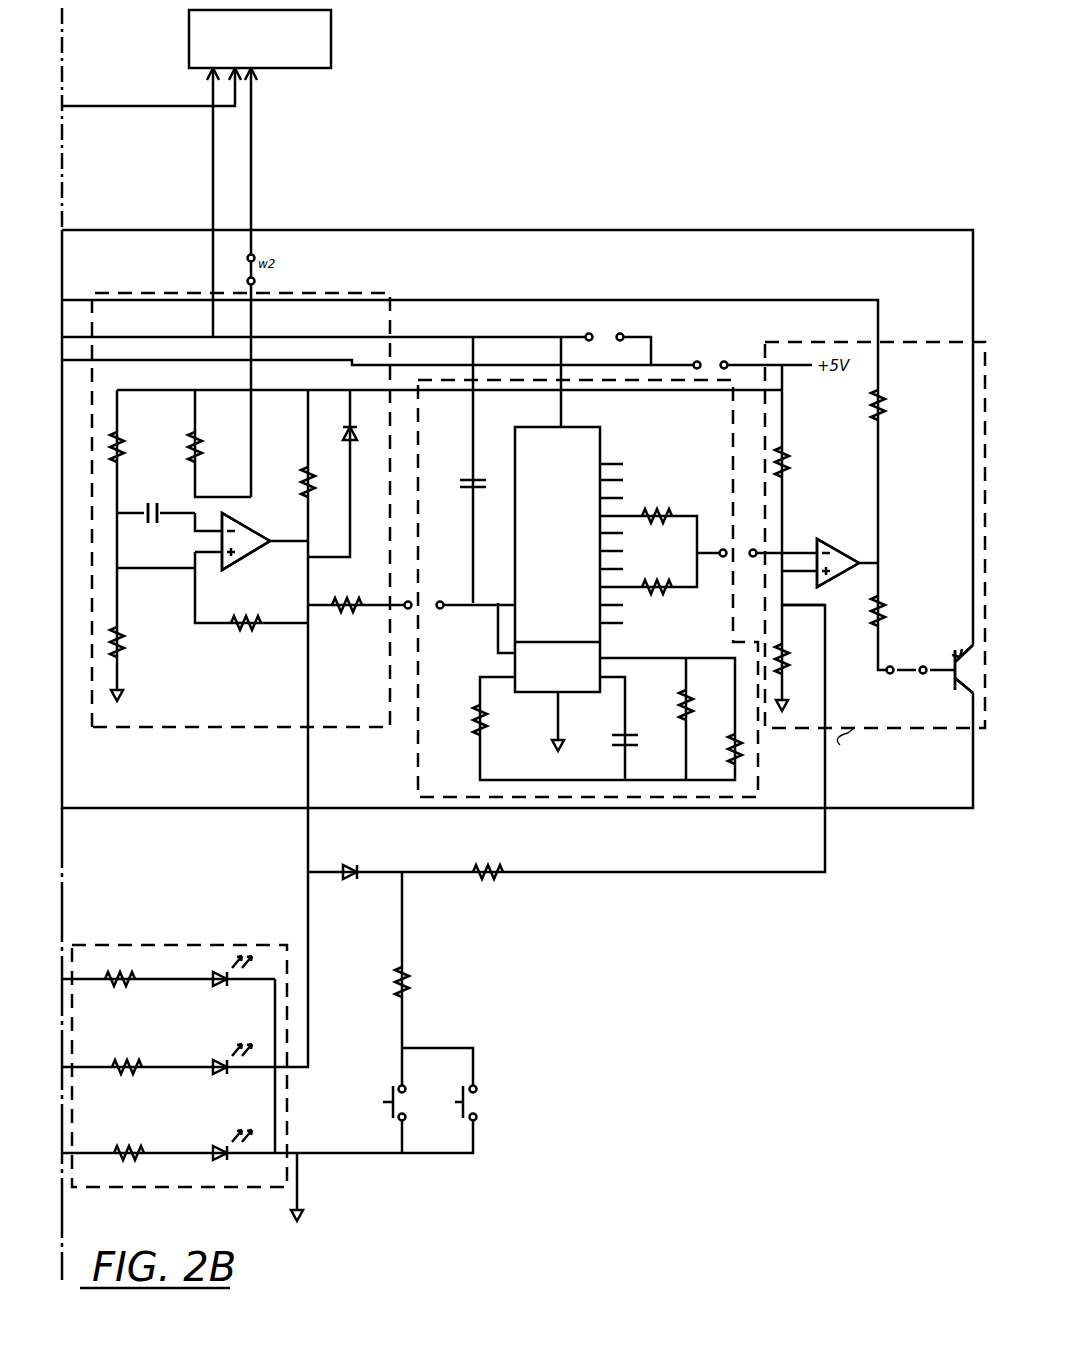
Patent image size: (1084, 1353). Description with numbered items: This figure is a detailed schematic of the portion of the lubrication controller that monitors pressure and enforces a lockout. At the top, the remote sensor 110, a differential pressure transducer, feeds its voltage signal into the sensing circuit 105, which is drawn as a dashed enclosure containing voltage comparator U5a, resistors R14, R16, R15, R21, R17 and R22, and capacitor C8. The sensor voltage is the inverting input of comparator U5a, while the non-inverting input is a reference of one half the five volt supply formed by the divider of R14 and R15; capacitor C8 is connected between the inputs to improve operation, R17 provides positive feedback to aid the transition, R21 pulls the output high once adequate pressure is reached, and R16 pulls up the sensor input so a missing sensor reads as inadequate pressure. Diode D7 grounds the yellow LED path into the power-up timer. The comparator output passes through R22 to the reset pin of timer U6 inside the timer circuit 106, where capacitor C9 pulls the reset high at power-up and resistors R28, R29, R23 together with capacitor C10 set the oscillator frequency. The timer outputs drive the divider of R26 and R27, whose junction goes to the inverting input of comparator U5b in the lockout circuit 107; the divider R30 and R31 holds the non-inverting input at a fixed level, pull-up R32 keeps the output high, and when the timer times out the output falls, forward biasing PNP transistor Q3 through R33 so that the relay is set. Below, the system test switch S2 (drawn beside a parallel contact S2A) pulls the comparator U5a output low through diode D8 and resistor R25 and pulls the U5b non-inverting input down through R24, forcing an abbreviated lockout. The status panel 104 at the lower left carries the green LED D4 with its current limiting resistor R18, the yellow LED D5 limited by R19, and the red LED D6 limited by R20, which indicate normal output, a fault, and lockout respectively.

The remote sensor 110 is at (331, 14).
The sensing circuit 105 is at (168, 266).
The timer circuit 106 is at (418, 756).
The lockout circuit 107 is at (942, 338).
The status panel 104 is at (266, 945).
The resistor R14 is at (132, 447).
The pull-up resistor R16 is at (210, 447).
The capacitor C8 is at (149, 505).
The resistor R15 is at (133, 642).
The voltage comparator U5a is at (250, 540).
The pull-up resistor R21 is at (322, 482).
The diode D7 is at (359, 425).
The positive feedback resistor R17 is at (245, 615).
The resistor R22 is at (347, 597).
The capacitor C9 is at (458, 484).
The timer U6 is at (557, 559).
The resistor R26 is at (657, 507).
The resistor R27 is at (656, 578).
The resistor R23 is at (496, 720).
The capacitor C10 is at (642, 743).
The resistor R28 is at (701, 705).
The resistor R29 is at (721, 749).
The resistor R30 is at (798, 462).
The resistor R31 is at (797, 659).
The pull-up resistor R32 is at (894, 405).
The resistor R33 is at (895, 611).
The comparator U5b is at (838, 554).
The PNP transistor Q3 is at (958, 660).
The diode D8 is at (345, 864).
The resistor R24 is at (488, 863).
The resistor R25 is at (418, 982).
The system test switch S2 is at (404, 1103).
The switch S2A is at (481, 1103).
The resistor R18 is at (116, 971).
The green LED D4 is at (219, 971).
The resistor R19 is at (122, 1058).
The yellow LED D5 is at (219, 1058).
The resistor R20 is at (123, 1145).
The red LED D6 is at (219, 1145).